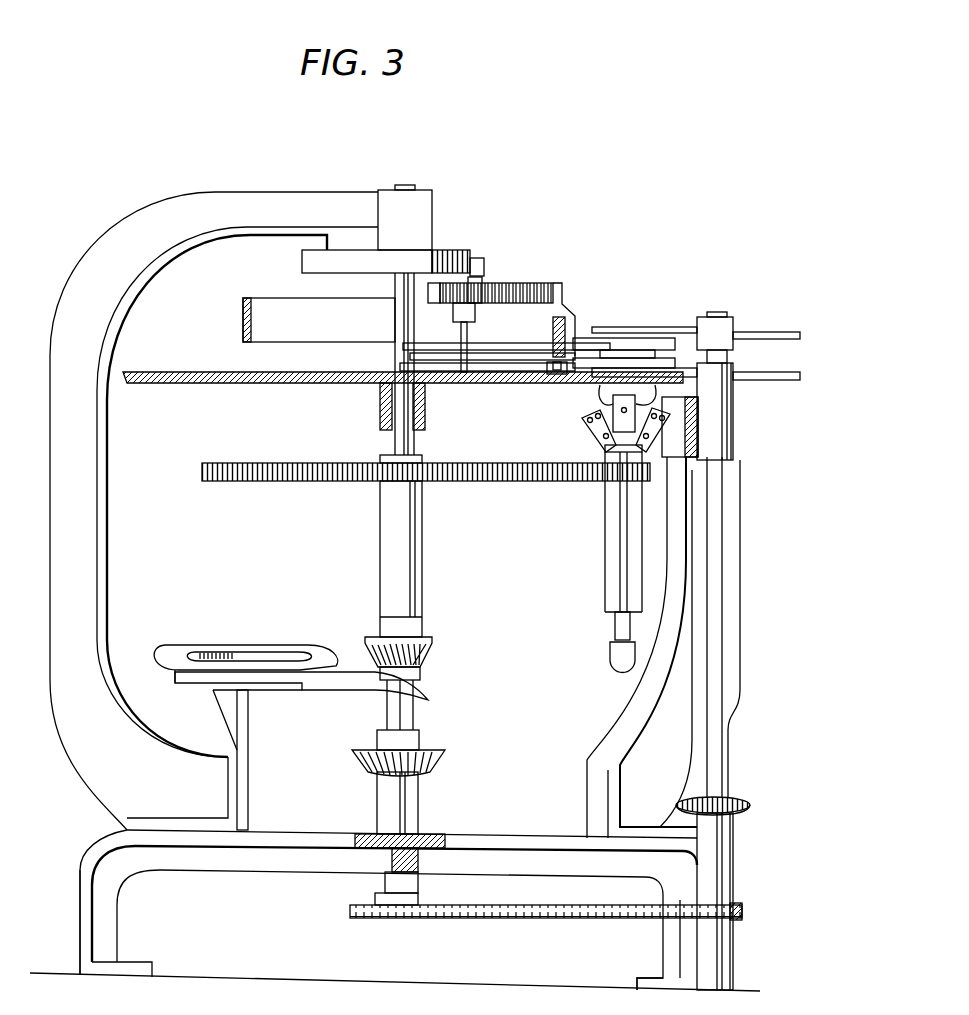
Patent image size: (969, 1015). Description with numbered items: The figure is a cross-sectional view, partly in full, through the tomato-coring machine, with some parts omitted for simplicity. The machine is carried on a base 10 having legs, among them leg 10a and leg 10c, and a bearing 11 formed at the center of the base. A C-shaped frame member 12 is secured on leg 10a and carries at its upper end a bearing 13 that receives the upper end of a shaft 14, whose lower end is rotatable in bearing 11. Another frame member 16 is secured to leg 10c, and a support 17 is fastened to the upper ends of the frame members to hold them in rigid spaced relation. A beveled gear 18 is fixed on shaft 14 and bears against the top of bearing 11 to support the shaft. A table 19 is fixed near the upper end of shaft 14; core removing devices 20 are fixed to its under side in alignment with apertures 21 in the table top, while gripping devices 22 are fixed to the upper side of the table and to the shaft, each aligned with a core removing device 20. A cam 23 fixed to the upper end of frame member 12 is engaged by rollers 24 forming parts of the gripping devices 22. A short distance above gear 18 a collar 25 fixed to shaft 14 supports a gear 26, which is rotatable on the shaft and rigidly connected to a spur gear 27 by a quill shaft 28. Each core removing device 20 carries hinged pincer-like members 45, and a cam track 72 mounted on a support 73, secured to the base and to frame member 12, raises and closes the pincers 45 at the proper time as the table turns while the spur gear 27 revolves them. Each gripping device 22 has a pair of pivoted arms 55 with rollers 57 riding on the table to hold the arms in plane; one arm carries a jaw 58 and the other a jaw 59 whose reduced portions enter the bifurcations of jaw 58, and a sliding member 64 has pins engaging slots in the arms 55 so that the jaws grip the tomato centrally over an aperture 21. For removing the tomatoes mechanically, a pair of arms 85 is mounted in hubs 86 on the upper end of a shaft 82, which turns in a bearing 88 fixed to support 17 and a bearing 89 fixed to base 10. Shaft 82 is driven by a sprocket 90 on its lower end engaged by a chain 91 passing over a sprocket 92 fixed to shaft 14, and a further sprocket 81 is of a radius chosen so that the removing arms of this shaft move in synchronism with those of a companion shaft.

The base 10 is at (550, 826).
The leg 10a is at (100, 895).
The leg 10c is at (700, 948).
The bearing 11 is at (395, 810).
The C-shaped frame member 12 is at (143, 240).
The bearing 13 is at (420, 211).
The shaft 14 is at (405, 187).
The frame member 16 is at (730, 683).
The support 17 is at (683, 425).
The beveled gear 18 is at (432, 760).
The table 19 is at (160, 372).
The core removing device 20 is at (594, 508).
The aperture 21 is at (615, 660).
The gripping device 22 is at (520, 282).
The cam 23 is at (350, 262).
The roller 24 is at (488, 262).
The collar 25 is at (432, 695).
The gear 26 is at (432, 655).
The spur gear 27 is at (232, 462).
The quill shaft 28 is at (398, 545).
The pincer-like members 45 is at (598, 395).
The arms 55 is at (508, 358).
The rollers 57 is at (540, 360).
The jaw 58 is at (580, 340).
The jaw 59 is at (645, 352).
The member 64 is at (478, 318).
The cam track 72 is at (262, 648).
The support 73 is at (240, 720).
The sprocket 81 is at (728, 797).
The shaft 82 is at (720, 522).
The arms 85 is at (637, 372).
The hubs 86 is at (735, 322).
The bearing 88 is at (722, 440).
The bearing 89 is at (720, 862).
The sprocket 90 is at (744, 912).
The chain 91 is at (582, 922).
The sprocket 92 is at (375, 900).